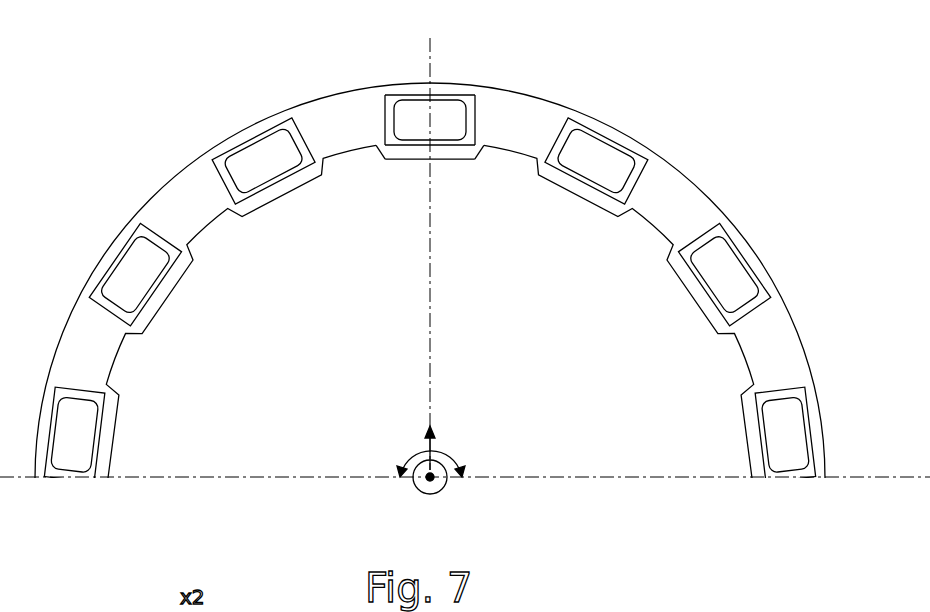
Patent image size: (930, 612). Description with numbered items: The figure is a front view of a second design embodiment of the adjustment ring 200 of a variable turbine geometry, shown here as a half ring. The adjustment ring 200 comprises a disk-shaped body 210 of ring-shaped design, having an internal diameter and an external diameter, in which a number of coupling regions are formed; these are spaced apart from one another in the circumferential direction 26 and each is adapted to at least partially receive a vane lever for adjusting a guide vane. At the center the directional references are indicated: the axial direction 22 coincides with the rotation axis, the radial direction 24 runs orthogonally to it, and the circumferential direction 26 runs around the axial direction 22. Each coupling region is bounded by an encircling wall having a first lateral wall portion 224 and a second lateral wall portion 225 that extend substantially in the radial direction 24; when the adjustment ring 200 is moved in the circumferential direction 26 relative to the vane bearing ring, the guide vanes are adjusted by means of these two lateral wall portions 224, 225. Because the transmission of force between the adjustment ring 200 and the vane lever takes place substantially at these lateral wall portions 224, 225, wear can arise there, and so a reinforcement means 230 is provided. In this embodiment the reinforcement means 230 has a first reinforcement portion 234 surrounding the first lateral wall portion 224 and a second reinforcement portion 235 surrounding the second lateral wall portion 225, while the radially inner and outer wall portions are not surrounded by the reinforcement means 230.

The adjustment ring 200 is at (682, 122).
The disk-shaped body 210 is at (177, 200).
The reinforcement means 230 is at (393, 83).
The first reinforcement portion 234 is at (383, 118).
The second reinforcement portion 235 is at (474, 114).
The first lateral wall portion 224 is at (384, 142).
The second lateral wall portion 225 is at (478, 143).
The axial direction 22 is at (434, 481).
The radial direction 24 is at (415, 444).
The circumferential direction 26 is at (442, 457).